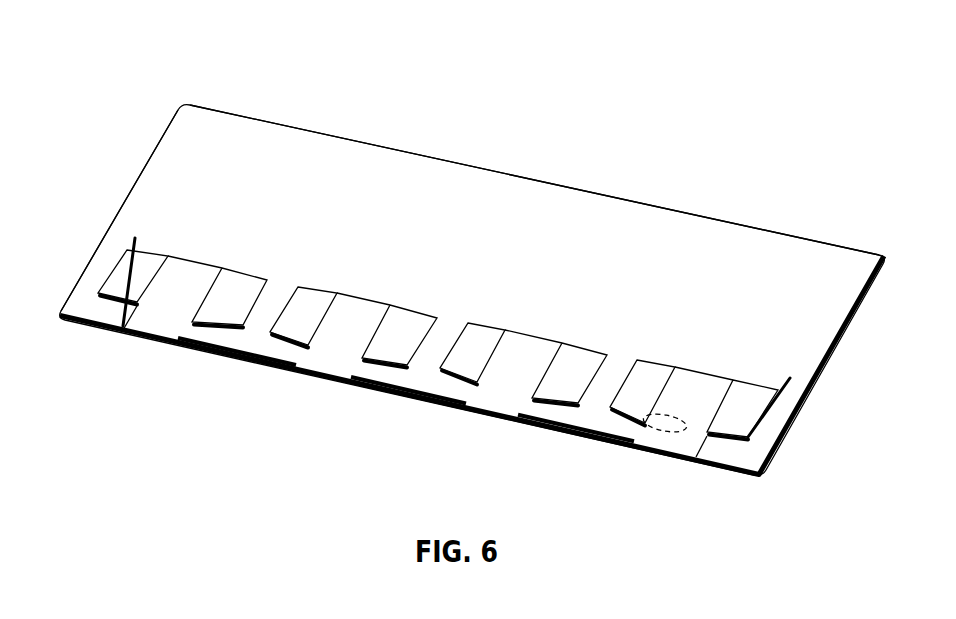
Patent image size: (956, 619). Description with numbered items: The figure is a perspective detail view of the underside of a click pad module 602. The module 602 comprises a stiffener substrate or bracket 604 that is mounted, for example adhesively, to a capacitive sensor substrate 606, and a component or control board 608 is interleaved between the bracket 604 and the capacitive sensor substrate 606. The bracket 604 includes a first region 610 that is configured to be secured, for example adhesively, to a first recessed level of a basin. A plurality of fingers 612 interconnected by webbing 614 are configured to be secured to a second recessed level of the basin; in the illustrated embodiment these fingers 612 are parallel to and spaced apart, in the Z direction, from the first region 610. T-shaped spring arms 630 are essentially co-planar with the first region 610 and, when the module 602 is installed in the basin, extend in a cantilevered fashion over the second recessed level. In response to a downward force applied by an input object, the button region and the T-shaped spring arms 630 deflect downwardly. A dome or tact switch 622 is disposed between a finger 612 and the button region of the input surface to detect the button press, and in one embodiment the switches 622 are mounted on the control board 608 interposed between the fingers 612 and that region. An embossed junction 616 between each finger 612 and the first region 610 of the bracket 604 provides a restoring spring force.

The click pad module 602 is at (103, 50).
The stiffener substrate or bracket 604 is at (152, 198).
The capacitive sensor substrate 606 is at (180, 351).
The component or control board 608 is at (130, 284).
The first region 610 is at (475, 256).
The fingers 612 is at (327, 365).
The webbing 614 is at (557, 427).
The embossed junction 616 is at (698, 395).
The dome or tact switch 622 is at (622, 450).
The T-shaped spring arms 630 is at (610, 383).